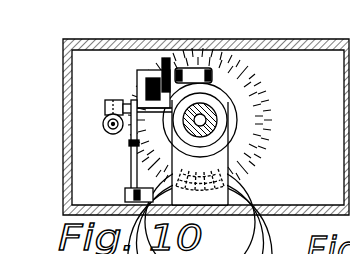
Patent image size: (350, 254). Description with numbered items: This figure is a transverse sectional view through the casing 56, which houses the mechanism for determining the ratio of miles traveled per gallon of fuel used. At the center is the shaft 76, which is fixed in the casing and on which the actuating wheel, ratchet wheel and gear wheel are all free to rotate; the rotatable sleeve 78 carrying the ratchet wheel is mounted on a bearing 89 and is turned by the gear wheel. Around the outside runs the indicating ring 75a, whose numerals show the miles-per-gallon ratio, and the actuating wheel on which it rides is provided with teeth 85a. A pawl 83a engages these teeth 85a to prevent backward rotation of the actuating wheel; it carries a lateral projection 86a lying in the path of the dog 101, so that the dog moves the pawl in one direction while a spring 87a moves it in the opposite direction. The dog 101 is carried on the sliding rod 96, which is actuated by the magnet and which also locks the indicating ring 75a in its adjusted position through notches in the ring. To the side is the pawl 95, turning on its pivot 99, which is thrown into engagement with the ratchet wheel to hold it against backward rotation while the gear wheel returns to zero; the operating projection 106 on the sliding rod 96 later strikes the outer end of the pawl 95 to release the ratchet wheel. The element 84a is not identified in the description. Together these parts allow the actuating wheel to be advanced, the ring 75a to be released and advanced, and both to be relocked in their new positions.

The casing 56 is at (67, 140).
The indicating ring 75a is at (250, 163).
The shaft 76 is at (247, 86).
The rotatable sleeve 78 is at (216, 118).
The pawl 83a is at (133, 100).
The plate 84a is at (203, 207).
The teeth 85a is at (238, 127).
The lateral projection 86a is at (106, 107).
The spring 87a is at (126, 192).
The bearing 89 is at (233, 147).
The pawl 95 is at (200, 68).
The sliding rod 96 is at (108, 132).
The pivot 99 is at (158, 58).
The dog 101 is at (128, 142).
The operating projection 106 is at (113, 100).